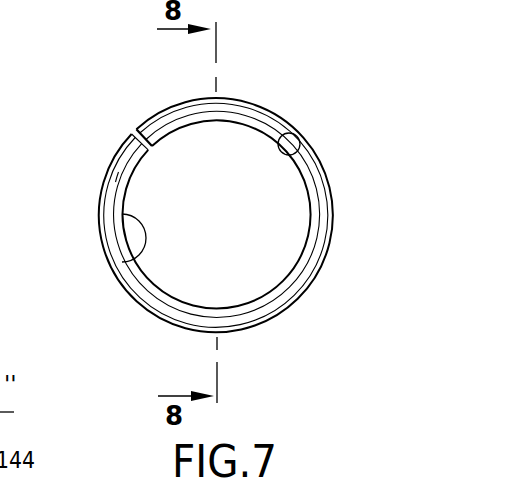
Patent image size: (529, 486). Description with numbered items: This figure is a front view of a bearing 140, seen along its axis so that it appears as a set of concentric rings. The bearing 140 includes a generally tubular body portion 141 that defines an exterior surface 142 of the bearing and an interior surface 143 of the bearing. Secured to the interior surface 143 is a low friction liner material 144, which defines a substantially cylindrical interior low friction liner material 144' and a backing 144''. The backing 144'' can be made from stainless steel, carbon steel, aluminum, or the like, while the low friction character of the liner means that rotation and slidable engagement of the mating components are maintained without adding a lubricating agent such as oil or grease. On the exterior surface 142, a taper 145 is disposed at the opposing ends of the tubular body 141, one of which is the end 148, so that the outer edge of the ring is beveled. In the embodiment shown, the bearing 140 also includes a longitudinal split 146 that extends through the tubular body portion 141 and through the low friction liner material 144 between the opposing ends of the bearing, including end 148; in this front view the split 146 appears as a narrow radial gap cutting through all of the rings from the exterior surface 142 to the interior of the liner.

The bearing 140 is at (268, 82).
The tubular body portion 141 is at (320, 190).
The exterior surface 142 is at (302, 293).
The interior surface 143 is at (302, 145).
The low friction liner material 144 is at (253, 214).
The interior low friction liner material 144' is at (79, 238).
The backing 144'' is at (59, 157).
The taper 145 is at (127, 288).
The longitudinal split 146 is at (147, 125).
The opposing end 148 is at (26, 414).